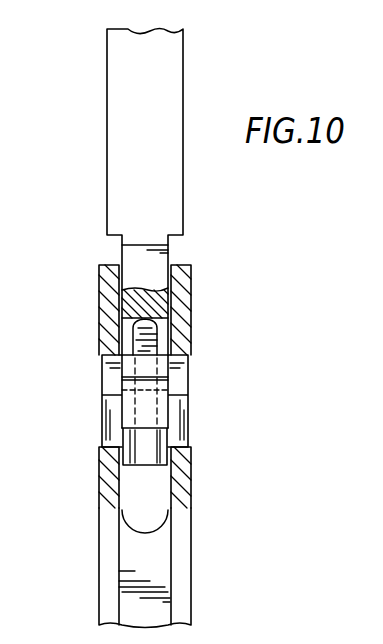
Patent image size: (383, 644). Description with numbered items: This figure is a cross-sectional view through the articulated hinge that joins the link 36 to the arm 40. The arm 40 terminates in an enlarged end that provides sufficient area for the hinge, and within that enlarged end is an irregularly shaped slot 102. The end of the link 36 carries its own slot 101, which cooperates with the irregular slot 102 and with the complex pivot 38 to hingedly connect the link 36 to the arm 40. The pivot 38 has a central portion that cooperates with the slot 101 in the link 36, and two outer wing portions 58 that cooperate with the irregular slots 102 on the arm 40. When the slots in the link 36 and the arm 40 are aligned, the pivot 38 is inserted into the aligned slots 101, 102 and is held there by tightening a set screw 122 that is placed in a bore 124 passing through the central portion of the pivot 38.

The link 36 is at (115, 222).
The slot 101 is at (172, 290).
The irregularly shaped slot 102 is at (183, 350).
The set screw 122 is at (133, 336).
The outer wing portions 58 is at (180, 378).
The complex pivot 38 is at (122, 381).
The bore 124 is at (133, 416).
The arm 40 is at (99, 571).